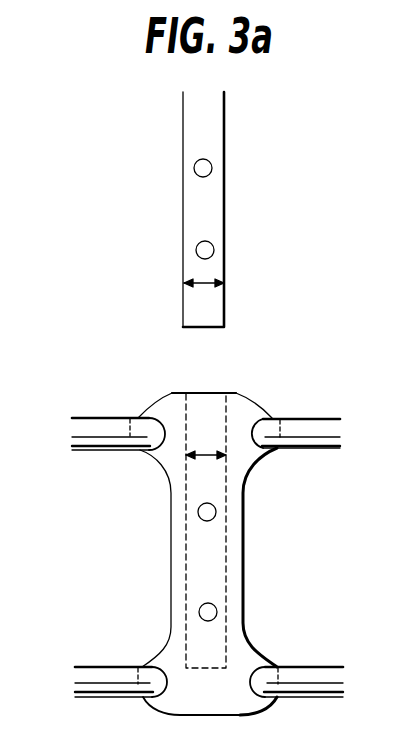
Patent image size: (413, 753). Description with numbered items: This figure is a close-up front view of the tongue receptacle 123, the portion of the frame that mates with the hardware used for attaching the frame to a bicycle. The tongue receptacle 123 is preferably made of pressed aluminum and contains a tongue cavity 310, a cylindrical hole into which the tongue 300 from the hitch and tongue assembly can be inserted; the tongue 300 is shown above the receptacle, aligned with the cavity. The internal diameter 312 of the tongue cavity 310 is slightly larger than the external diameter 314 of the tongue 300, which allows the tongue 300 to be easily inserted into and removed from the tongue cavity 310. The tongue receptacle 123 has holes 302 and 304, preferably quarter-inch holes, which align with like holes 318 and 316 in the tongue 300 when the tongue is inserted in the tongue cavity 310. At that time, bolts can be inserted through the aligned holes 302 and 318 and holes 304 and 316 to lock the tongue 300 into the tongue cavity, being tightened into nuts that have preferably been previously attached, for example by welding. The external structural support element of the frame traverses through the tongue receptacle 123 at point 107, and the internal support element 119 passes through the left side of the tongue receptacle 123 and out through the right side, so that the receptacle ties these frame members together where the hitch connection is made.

The tongue 300 is at (225, 121).
The hole 318 is at (212, 167).
The hole 316 is at (214, 250).
The external diameter 314 is at (201, 288).
The tongue cavity 310 is at (203, 392).
The tongue receptacle 123 is at (232, 392).
The point 107 is at (103, 418).
The internal diameter 312 is at (203, 462).
The hole 302 is at (217, 512).
The hole 304 is at (218, 612).
The internal support element 119 is at (110, 667).